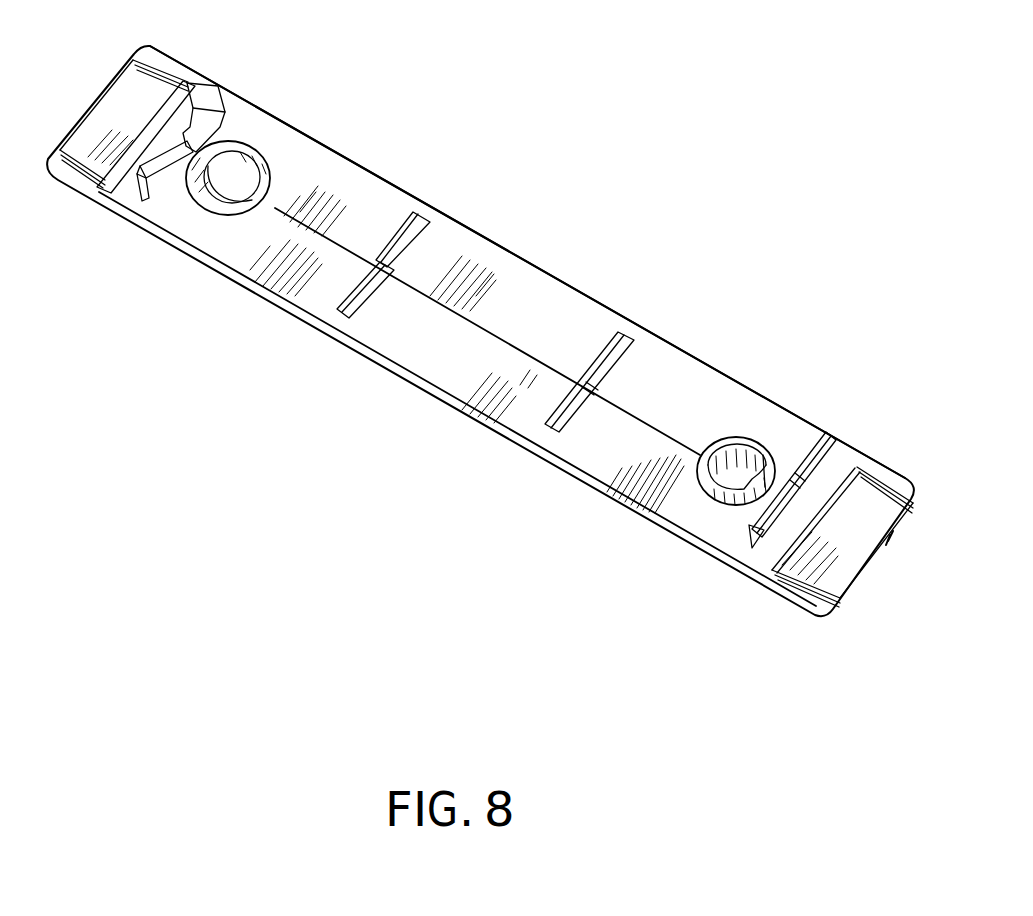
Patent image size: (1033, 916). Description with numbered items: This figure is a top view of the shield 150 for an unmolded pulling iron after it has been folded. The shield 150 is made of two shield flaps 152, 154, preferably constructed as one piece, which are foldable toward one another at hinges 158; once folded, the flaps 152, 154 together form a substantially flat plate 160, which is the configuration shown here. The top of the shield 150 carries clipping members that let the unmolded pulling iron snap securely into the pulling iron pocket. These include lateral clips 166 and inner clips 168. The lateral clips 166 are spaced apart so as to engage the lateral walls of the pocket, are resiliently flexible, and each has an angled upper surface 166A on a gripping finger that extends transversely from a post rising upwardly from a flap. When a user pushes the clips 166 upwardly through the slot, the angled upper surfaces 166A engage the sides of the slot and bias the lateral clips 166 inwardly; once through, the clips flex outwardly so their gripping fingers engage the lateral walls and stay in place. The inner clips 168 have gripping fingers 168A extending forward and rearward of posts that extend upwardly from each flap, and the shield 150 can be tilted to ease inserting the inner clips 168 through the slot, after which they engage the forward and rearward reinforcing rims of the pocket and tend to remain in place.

The shield 150 is at (643, 112).
The shield flap 152 is at (419, 392).
The shield flap 154 is at (380, 177).
The hinge 158 is at (60, 152).
The flat plate 160 is at (542, 312).
The lateral clip 166 is at (220, 96).
The angled upper surface 166A is at (840, 440).
The inner clip 168 is at (553, 400).
The gripping finger 168A is at (420, 220).